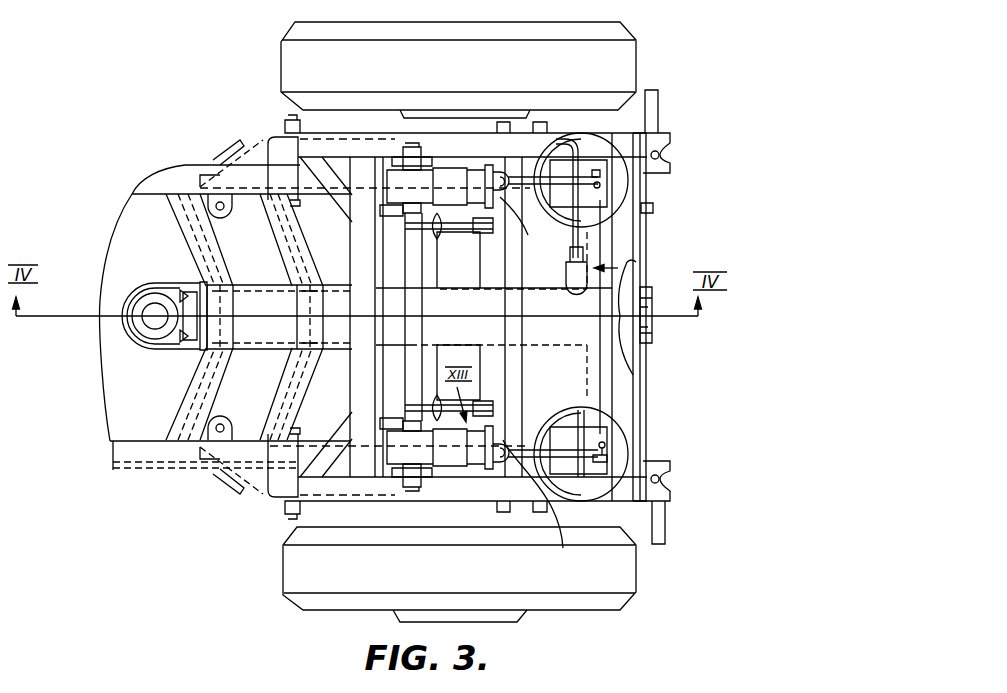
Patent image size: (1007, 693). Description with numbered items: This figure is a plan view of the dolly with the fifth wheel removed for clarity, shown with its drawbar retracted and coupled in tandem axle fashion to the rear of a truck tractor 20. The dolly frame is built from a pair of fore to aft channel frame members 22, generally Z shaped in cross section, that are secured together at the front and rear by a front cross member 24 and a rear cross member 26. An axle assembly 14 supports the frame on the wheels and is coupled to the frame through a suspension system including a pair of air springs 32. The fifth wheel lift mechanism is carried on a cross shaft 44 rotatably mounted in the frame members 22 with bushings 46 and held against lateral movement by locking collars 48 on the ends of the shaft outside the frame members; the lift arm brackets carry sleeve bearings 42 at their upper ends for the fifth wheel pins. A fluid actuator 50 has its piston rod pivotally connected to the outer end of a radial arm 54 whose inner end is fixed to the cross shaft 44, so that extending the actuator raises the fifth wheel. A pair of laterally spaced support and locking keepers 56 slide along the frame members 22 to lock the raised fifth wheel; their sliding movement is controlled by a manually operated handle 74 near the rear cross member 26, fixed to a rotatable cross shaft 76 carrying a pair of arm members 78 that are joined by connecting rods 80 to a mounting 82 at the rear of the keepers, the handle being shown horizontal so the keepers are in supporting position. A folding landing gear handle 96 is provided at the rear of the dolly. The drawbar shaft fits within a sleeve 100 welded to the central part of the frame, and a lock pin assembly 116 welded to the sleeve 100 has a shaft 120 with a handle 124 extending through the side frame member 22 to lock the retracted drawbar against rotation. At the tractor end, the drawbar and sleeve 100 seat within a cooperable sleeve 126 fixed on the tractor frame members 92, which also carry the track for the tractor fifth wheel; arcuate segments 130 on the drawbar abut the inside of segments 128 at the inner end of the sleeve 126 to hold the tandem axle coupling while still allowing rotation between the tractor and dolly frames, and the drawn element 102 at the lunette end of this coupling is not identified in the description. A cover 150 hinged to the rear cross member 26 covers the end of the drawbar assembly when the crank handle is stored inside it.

The axle assembly 14 is at (443, 533).
The truck tractor 20 is at (132, 123).
The channel frame members 22 is at (333, 143).
The front cross member 24 is at (340, 383).
The rear cross member 26 is at (627, 243).
The air springs 32 is at (603, 223).
The sleeve bearings 42 is at (441, 194).
The cross shaft 44 is at (413, 275).
The bushings 46 is at (411, 147).
The locking collars 48 is at (421, 153).
The fluid actuator 50 is at (383, 227).
The radial arm 54 is at (440, 234).
The support and locking keepers 56 is at (503, 163).
The manually operated handle 74 is at (632, 508).
The cross shaft 76 is at (628, 350).
The arm members 78 is at (608, 176).
The connecting rods 80 is at (586, 172).
The mounting 82 is at (544, 381).
The tractor frame members 92 is at (200, 172).
The folding landing gear handle 96 is at (653, 207).
The sleeve 100 is at (448, 338).
The hub 102 is at (150, 297).
The lock pin assembly 116 is at (627, 263).
The shaft 120 is at (573, 241).
The handle 124 is at (567, 148).
The cooperable sleeve 126 is at (257, 284).
The segments 128 is at (207, 278).
The arcuate segments 130 is at (190, 348).
The cover 150 is at (653, 337).